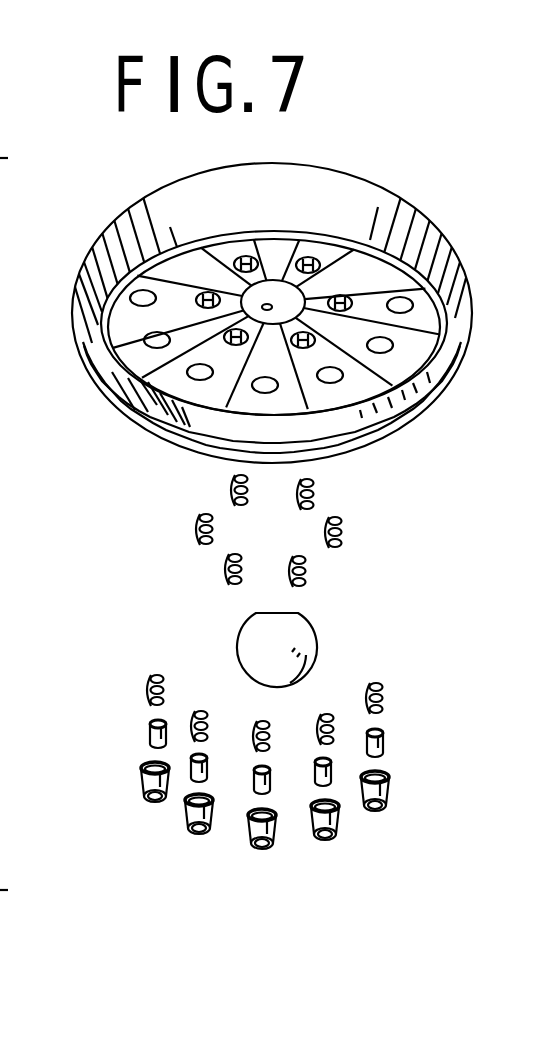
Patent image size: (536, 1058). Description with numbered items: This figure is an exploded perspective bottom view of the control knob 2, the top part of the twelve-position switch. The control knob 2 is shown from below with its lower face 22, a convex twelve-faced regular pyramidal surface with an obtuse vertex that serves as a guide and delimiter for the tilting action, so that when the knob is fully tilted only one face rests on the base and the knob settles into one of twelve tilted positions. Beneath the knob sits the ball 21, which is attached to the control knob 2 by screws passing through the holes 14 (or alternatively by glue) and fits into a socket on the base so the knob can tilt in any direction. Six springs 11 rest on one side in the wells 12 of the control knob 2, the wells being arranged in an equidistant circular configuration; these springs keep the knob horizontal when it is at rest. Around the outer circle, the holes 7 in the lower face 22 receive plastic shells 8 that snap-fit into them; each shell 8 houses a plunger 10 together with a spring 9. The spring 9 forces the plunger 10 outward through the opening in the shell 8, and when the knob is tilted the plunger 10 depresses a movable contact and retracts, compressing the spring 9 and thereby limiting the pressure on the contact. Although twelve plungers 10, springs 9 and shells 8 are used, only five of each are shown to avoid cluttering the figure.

The control knob 2 is at (127, 222).
The lower face 22 is at (129, 314).
The holes 7 is at (155, 347).
The wells 12 is at (238, 346).
The holes 14 is at (282, 291).
The springs 11 is at (233, 488).
The ball 21 is at (318, 640).
The springs 9 is at (150, 690).
The plungers 10 is at (190, 765).
The shells 8 is at (185, 835).